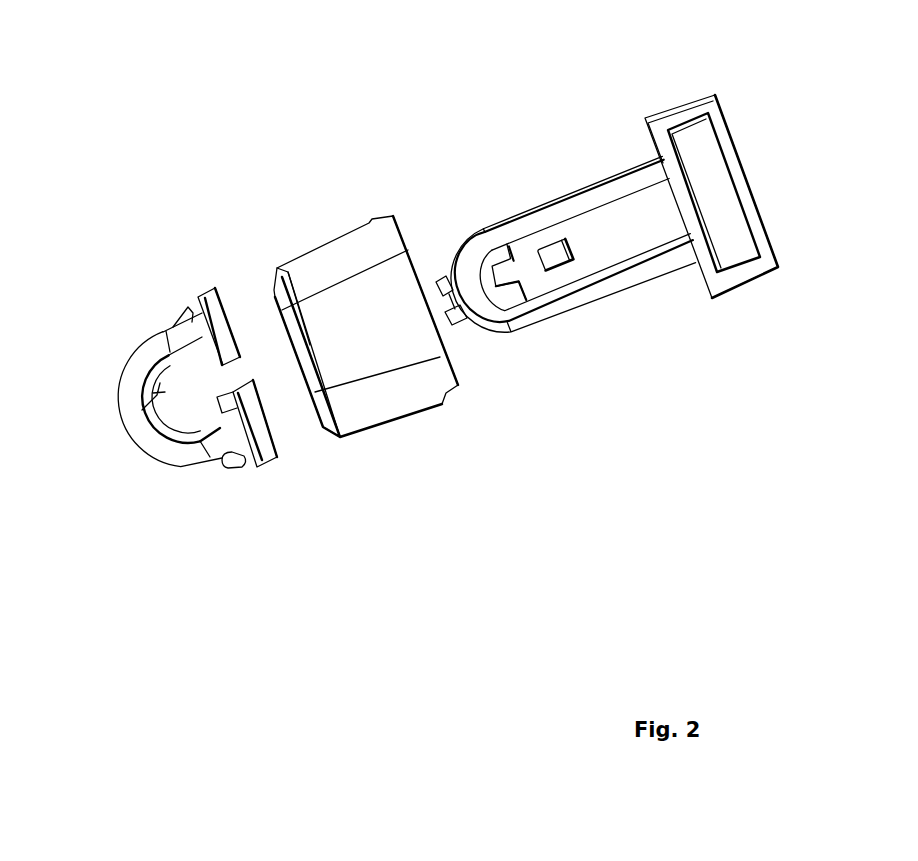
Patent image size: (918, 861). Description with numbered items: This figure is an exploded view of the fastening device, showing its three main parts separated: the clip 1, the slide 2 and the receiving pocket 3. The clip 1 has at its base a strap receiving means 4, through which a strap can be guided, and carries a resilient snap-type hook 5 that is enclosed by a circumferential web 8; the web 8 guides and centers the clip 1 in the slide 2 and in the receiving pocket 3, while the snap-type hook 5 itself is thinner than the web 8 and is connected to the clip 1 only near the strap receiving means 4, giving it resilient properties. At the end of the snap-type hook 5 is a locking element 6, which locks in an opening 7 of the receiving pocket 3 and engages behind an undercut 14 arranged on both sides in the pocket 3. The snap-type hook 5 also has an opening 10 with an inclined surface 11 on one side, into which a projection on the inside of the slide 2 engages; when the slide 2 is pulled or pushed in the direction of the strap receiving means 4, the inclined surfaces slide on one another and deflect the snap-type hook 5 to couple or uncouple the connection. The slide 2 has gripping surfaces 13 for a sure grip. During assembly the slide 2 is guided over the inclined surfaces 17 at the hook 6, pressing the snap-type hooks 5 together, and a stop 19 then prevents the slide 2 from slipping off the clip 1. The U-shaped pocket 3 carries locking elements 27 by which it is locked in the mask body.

The clip 1 is at (660, 122).
The slide 2 is at (323, 268).
The receiving pocket 3 is at (182, 331).
The strap receiving means 4 is at (723, 190).
The snap-type hook 5 is at (630, 218).
The locking element 6 is at (483, 290).
The opening 7 is at (193, 387).
The circumferential web 8 is at (541, 208).
The opening 10 is at (558, 257).
The inclined surface 11 is at (577, 262).
The gripping surfaces 13 is at (365, 327).
The undercut 14 is at (206, 320).
The inclined surfaces 17 is at (499, 282).
The stop 19 is at (542, 266).
The locking elements 27 is at (233, 470).